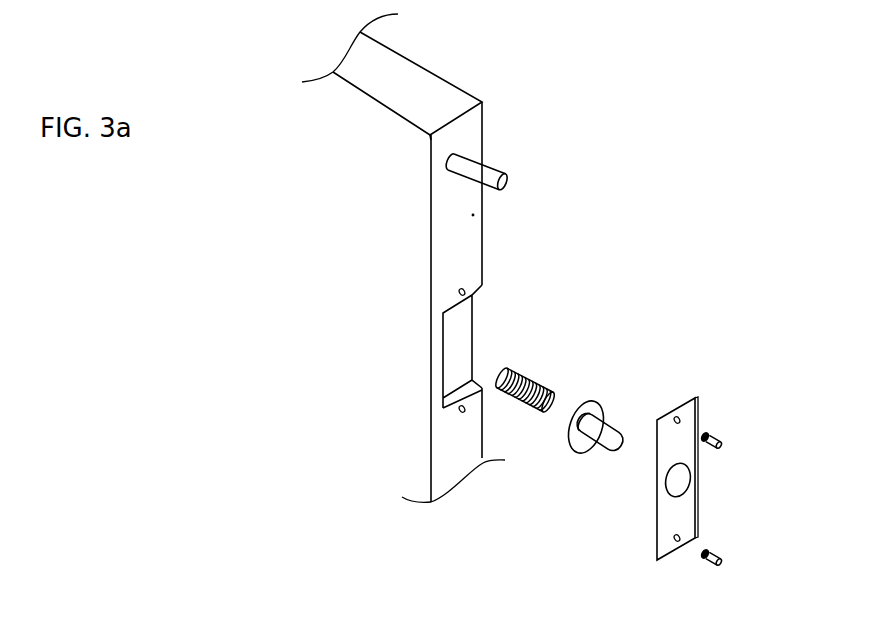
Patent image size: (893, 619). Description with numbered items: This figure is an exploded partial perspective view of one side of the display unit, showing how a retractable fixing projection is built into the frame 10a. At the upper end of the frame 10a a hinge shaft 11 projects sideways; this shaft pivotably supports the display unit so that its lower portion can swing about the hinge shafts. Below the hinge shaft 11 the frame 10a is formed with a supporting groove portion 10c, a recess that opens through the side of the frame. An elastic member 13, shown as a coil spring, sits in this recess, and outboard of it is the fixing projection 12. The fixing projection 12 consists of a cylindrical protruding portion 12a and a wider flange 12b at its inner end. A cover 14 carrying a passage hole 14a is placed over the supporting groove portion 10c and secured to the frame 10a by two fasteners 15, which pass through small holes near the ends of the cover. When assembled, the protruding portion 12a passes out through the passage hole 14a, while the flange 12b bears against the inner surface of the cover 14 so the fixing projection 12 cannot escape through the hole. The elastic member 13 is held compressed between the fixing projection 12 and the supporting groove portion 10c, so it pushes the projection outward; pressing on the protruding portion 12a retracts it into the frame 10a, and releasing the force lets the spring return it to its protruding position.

The frame 10a is at (443, 90).
The supporting groove portion 10c is at (453, 355).
The hinge shaft 11 is at (487, 165).
The fixing projection 12 is at (626, 426).
The protruding portion 12a is at (610, 448).
The flange 12b is at (593, 405).
The elastic member 13 is at (518, 367).
The cover 14 is at (702, 446).
The passage hole 14a is at (687, 492).
The fastener 15 is at (723, 438).